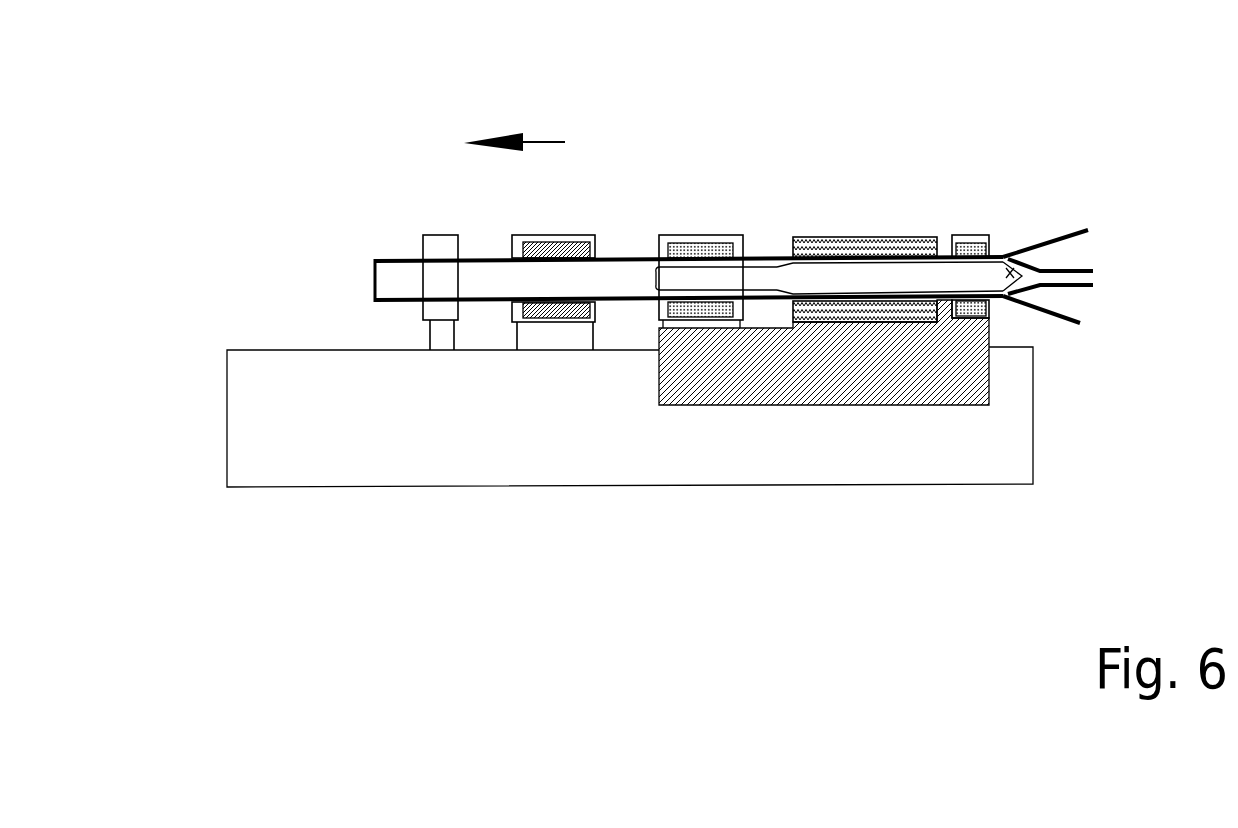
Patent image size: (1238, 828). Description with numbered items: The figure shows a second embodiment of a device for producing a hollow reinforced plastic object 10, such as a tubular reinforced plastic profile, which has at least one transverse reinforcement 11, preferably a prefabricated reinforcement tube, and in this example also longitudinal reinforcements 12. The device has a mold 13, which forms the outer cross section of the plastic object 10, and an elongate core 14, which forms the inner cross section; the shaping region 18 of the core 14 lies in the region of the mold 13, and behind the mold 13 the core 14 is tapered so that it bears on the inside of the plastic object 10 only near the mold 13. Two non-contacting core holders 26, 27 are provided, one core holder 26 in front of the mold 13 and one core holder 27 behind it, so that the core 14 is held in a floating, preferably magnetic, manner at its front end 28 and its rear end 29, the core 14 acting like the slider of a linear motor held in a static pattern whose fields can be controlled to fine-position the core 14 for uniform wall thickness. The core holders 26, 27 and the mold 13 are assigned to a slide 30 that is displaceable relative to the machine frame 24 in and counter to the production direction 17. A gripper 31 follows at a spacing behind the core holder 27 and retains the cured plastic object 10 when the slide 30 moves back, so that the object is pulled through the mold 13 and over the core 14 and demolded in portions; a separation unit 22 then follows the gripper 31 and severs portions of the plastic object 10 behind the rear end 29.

The hollow reinforced plastic object 10 is at (396, 257).
The transverse reinforcement 11 is at (1083, 287).
The longitudinal reinforcements 12 is at (1065, 235).
The mold 13 is at (832, 243).
The elongate core 14 is at (763, 280).
The production direction 17 is at (547, 142).
The shaping region 18 is at (858, 282).
The separation unit 22 is at (437, 248).
The machine frame 24 is at (493, 455).
The non-contacting core holder 26 is at (972, 240).
The non-contacting core holder 27 is at (697, 243).
The front end 28 is at (1005, 262).
The rear end 29 is at (660, 282).
The slide 30 is at (875, 385).
The gripper 31 is at (573, 248).